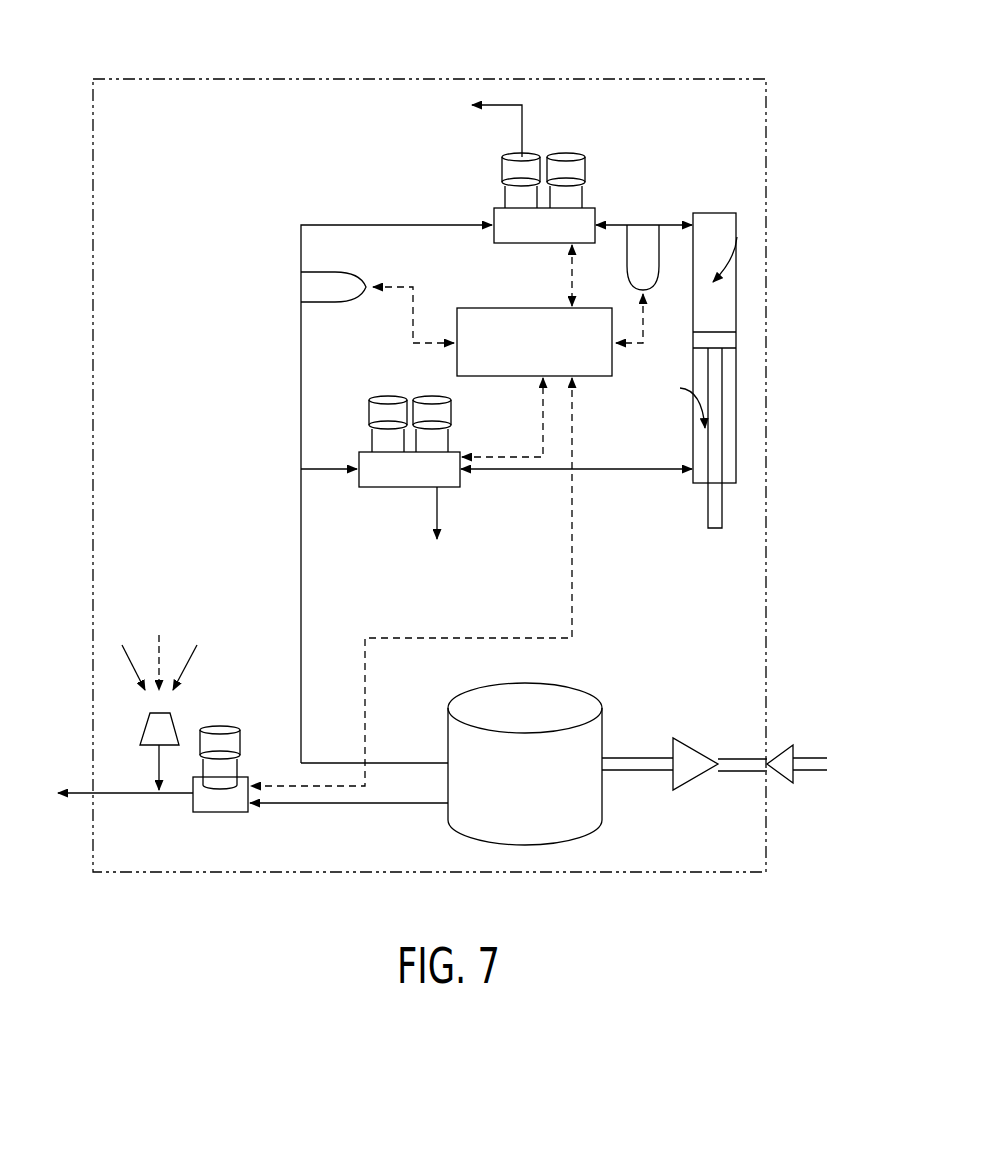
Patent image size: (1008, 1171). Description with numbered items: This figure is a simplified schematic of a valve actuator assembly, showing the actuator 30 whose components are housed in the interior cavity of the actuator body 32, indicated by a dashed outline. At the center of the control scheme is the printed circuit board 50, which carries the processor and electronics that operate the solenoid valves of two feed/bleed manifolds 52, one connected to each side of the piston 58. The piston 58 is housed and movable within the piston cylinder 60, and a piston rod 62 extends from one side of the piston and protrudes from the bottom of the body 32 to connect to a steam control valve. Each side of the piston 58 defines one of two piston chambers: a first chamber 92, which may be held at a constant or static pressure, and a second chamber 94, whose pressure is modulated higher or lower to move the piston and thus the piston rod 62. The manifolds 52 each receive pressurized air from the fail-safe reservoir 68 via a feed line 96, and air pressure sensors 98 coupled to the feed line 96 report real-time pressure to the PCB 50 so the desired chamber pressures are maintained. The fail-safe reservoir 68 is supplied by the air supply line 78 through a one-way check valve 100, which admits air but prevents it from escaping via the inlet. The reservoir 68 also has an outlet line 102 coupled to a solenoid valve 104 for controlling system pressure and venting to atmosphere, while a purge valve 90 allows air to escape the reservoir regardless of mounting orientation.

The actuator 30 is at (735, 58).
The actuator body 32 is at (769, 585).
The printed circuit board 50 is at (515, 308).
The feed/bleed manifold 52 is at (603, 211).
The piston 58 is at (723, 338).
The piston cylinder 60 is at (737, 297).
The piston rod 62 is at (723, 450).
The fail-safe reservoir 68 is at (558, 700).
The air supply line 78 is at (813, 758).
The purge valve 90 is at (172, 718).
The first chamber 92 is at (737, 237).
The second chamber 94 is at (680, 390).
The feed line 96 is at (301, 514).
The air pressure sensor 98 is at (331, 271).
The one-way check valve 100 is at (697, 746).
The outlet line 102 is at (353, 804).
The solenoid valve 104 is at (208, 803).